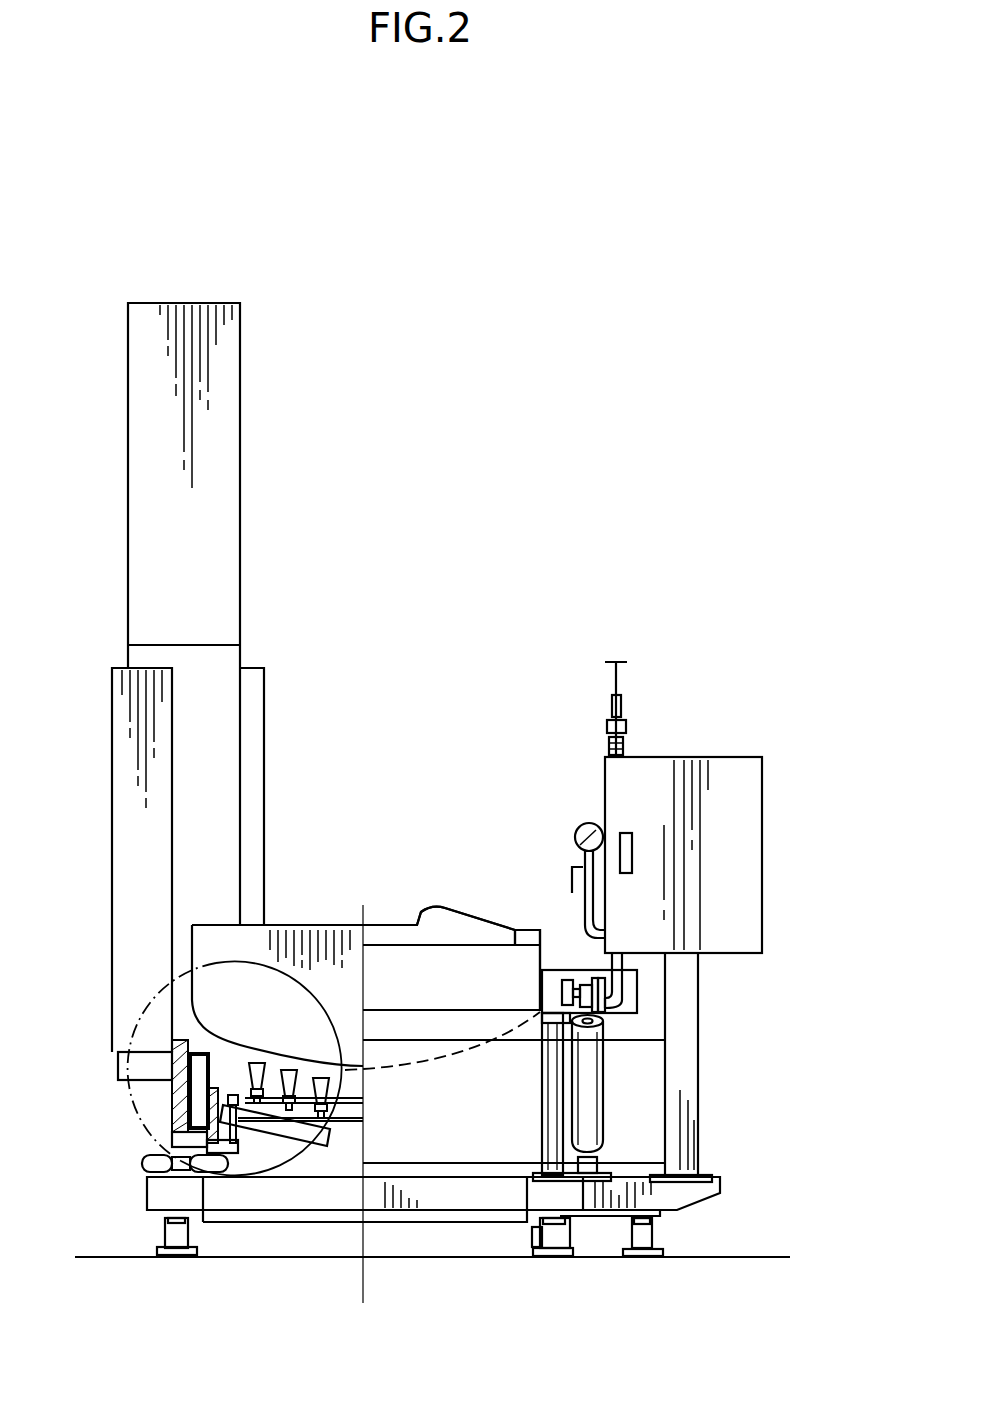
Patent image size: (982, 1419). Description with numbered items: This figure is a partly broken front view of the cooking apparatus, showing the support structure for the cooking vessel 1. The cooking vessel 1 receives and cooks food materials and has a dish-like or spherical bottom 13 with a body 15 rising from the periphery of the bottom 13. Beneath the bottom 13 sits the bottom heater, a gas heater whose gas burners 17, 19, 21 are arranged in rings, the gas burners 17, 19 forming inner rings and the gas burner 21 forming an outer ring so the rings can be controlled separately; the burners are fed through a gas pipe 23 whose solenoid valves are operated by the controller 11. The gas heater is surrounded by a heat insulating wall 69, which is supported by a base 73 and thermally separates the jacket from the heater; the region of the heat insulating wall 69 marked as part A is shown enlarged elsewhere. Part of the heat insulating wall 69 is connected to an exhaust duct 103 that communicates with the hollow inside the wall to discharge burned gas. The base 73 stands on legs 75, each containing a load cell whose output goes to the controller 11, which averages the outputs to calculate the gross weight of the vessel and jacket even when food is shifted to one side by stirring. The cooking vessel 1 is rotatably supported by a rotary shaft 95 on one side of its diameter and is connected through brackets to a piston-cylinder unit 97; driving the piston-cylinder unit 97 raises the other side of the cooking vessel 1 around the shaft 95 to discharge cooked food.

The cooking vessel 1 is at (318, 926).
The controller 11 is at (762, 862).
The bottom 13 is at (362, 1067).
The body 15 is at (190, 947).
The gas burner 17 is at (337, 1097).
The gas burner 19 is at (290, 1105).
The gas burner 21 is at (258, 1102).
The gas pipe 23 is at (145, 1163).
The heat insulating wall 69 is at (172, 1099).
The base 73 is at (690, 1195).
The leg 75 is at (178, 1257).
The rotary shaft 95 is at (556, 972).
The piston-cylinder unit 97 is at (606, 1086).
The exhaust duct 103 is at (240, 545).
The part A is at (141, 1127).